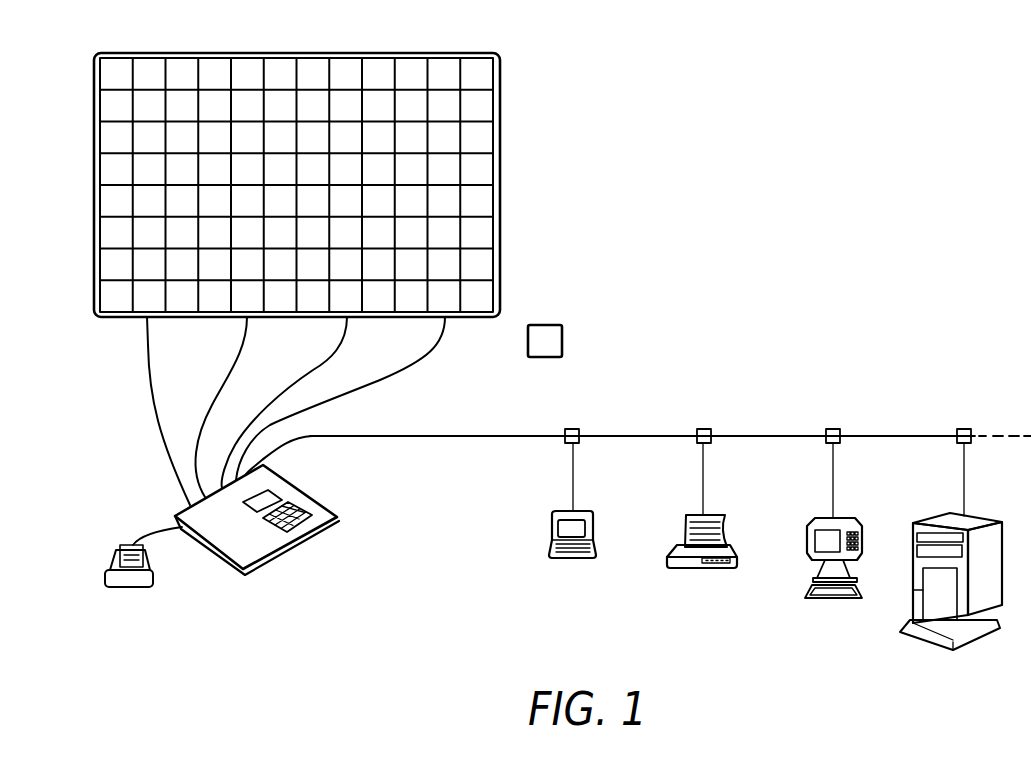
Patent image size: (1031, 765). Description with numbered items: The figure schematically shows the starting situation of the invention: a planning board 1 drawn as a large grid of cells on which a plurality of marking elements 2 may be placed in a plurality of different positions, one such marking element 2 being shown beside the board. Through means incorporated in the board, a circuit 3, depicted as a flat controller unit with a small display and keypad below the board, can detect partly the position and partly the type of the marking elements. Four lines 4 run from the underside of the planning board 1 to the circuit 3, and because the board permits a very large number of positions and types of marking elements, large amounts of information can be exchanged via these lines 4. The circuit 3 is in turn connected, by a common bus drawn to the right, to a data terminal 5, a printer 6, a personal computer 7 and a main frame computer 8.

The planning board 1 is at (520, 180).
The marking element 2 is at (518, 287).
The circuit 3 is at (298, 539).
The lines 4 is at (148, 395).
The data terminal 5 is at (572, 558).
The printer 6 is at (702, 570).
The personal computer 7 is at (810, 519).
The main frame computer 8 is at (933, 518).